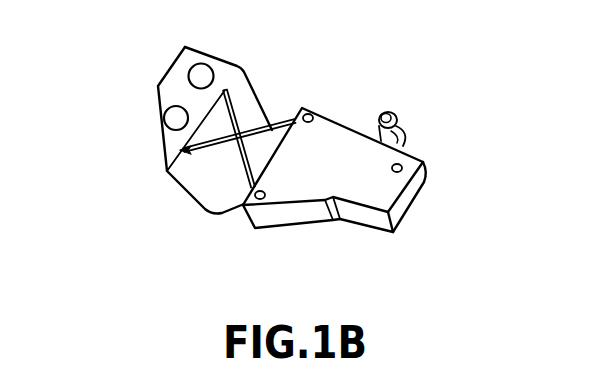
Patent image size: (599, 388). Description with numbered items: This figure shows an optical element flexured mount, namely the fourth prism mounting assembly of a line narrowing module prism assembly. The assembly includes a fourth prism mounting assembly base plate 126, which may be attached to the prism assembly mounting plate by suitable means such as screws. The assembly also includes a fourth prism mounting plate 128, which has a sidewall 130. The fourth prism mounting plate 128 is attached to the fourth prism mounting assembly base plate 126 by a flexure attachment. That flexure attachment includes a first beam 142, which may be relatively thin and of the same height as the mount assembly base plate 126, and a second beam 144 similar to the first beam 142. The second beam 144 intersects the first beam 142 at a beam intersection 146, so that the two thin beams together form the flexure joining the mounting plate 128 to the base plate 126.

The fourth prism mounting assembly base plate 126 is at (166, 85).
The fourth prism mounting plate 128 is at (338, 135).
The sidewall 130 is at (364, 230).
The first beam 142 is at (236, 112).
The second beam 144 is at (183, 150).
The beam intersection 146 is at (248, 133).